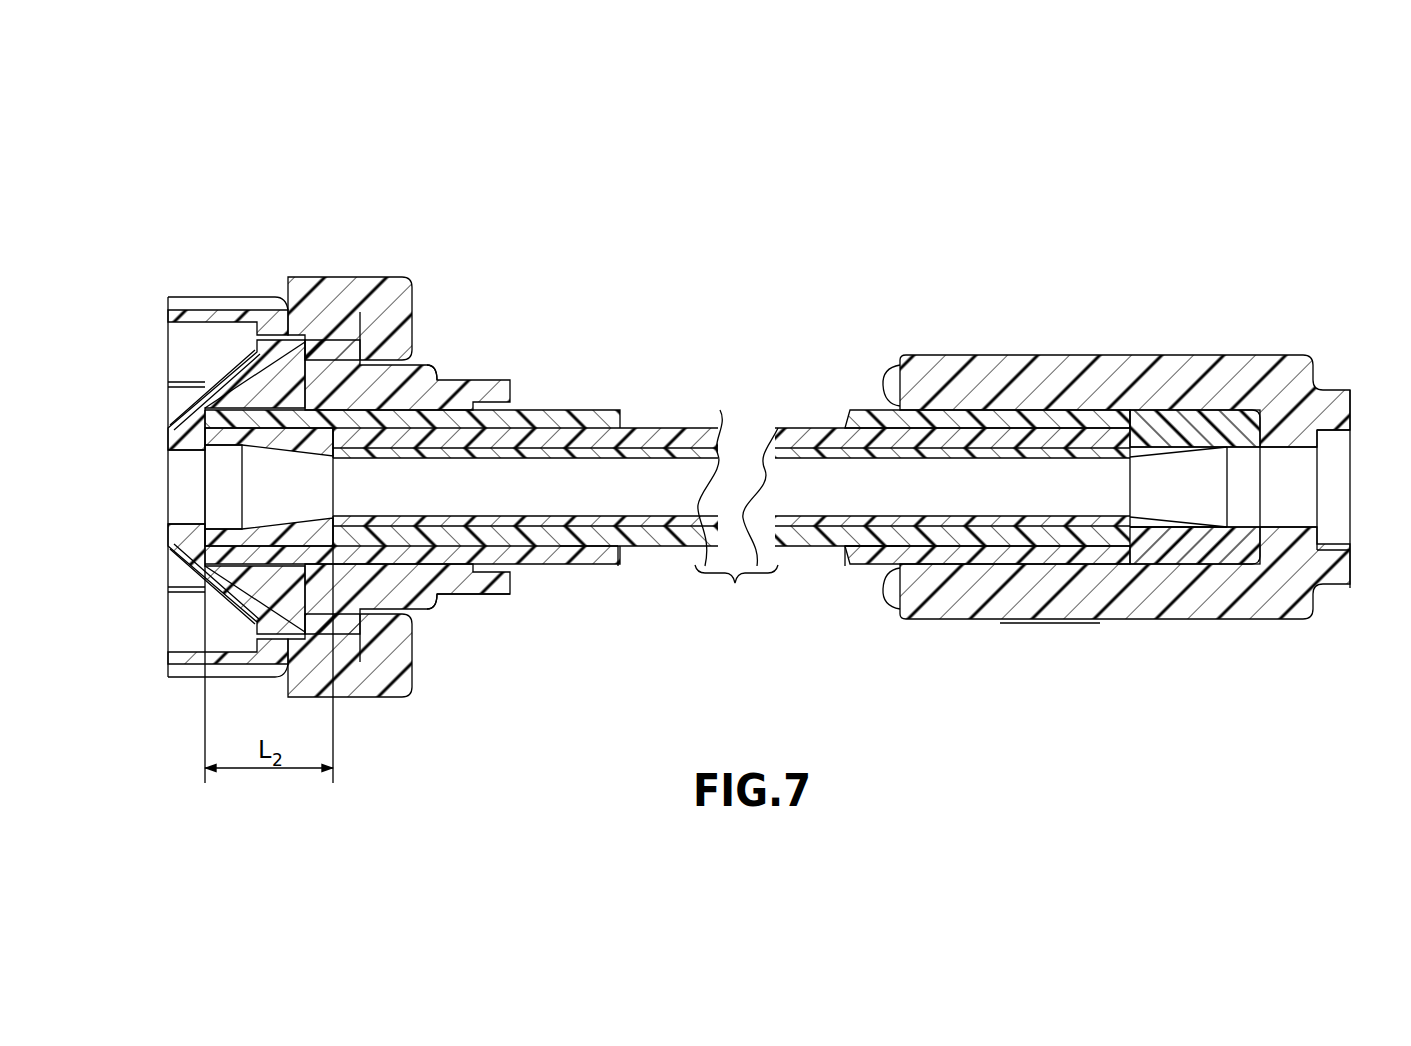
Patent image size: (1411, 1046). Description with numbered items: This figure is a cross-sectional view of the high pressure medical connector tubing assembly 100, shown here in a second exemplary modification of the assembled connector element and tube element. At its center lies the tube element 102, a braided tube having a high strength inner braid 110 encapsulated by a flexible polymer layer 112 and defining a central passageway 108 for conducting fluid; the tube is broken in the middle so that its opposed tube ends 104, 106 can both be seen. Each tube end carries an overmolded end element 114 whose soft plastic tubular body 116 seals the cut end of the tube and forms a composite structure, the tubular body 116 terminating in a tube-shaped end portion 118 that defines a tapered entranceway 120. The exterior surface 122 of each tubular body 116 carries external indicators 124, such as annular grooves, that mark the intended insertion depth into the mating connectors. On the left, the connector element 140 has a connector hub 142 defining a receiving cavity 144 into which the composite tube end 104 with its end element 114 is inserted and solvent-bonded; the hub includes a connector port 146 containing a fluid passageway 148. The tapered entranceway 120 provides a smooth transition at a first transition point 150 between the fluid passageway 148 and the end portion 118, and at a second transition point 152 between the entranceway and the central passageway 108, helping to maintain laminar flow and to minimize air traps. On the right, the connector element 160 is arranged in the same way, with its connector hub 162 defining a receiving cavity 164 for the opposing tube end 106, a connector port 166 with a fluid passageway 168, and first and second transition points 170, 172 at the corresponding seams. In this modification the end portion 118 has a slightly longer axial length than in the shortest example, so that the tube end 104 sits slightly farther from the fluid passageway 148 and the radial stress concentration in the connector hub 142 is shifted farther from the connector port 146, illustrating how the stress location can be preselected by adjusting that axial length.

The medical connector tubing assembly 100 is at (749, 435).
The tube element 102 is at (672, 430).
The tube end 104 is at (240, 430).
The tube end 106 is at (1136, 428).
The central passageway 108 is at (745, 497).
The inner braid 110 is at (817, 540).
The flexible polymer layer 112 is at (652, 540).
The end element 114 is at (584, 580).
The tubular body 116 is at (455, 596).
The end portion 118 is at (318, 530).
The tapered entranceway 120 is at (277, 523).
The exterior surface 122 is at (607, 410).
The external indicator 124 is at (560, 410).
The connector element 140 is at (303, 384).
The connector hub 142 is at (470, 382).
The receiving cavity 144 is at (412, 372).
The connector port 146 is at (183, 558).
The fluid passageway 148 is at (177, 488).
The first transition point 150 is at (203, 463).
The second transition point 152 is at (330, 497).
The connector element 160 is at (1151, 369).
The connector hub 162 is at (1027, 355).
The receiving cavity 164 is at (1104, 408).
The connector port 166 is at (1343, 420).
The fluid passageway 168 is at (1303, 490).
The first transition point 170 is at (1263, 467).
The second transition point 172 is at (1131, 493).